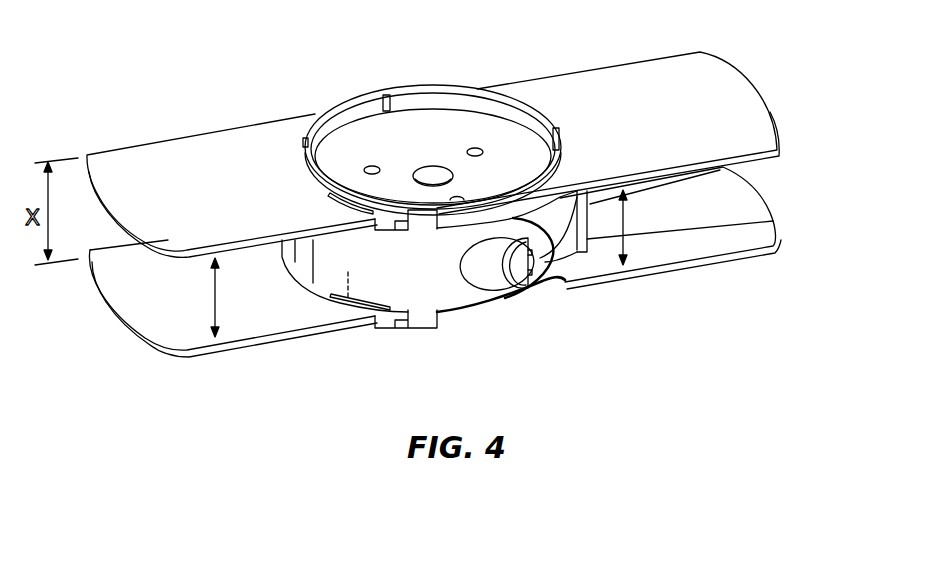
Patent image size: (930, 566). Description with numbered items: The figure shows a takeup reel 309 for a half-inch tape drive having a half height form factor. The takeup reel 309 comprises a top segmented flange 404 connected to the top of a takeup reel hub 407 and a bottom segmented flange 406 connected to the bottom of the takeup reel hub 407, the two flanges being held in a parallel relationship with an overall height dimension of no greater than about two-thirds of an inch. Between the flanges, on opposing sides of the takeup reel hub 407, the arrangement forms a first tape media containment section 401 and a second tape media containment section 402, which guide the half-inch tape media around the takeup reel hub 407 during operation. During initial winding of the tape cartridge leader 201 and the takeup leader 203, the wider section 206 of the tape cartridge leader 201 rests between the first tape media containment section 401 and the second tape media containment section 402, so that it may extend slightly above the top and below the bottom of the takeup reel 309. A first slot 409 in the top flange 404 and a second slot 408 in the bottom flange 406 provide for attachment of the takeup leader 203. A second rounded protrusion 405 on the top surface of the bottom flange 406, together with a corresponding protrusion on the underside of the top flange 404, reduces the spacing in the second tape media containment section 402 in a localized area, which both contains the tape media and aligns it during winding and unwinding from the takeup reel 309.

The takeup reel 309 is at (393, 45).
The top segmented flange 404 is at (667, 127).
The takeup reel hub 407 is at (428, 153).
The first slot 409 is at (330, 197).
The second rounded protrusion 405 is at (735, 195).
The bottom segmented flange 406 is at (172, 297).
The first tape media containment section 401 is at (216, 315).
The second tape media containment section 402 is at (627, 248).
The second slot 408 is at (343, 303).
The wider section 206 is at (423, 320).
The takeup leader 203 is at (470, 297).
The tape cartridge leader 201 is at (525, 278).